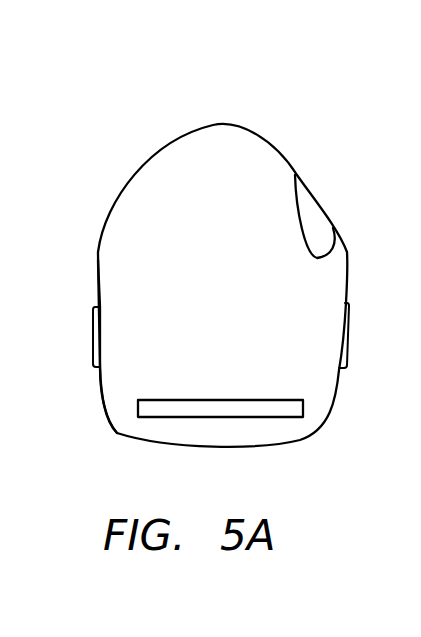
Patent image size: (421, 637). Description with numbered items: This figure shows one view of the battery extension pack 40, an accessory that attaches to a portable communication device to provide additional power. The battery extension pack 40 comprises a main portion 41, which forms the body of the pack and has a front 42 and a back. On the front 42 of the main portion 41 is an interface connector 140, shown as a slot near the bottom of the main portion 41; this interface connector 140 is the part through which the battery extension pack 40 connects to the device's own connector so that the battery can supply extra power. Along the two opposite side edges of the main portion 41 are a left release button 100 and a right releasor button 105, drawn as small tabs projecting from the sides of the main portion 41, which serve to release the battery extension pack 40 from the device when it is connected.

The battery extension pack 40 is at (177, 77).
The main portion 41 is at (303, 288).
The front 42 is at (140, 360).
The right releasor button 105 is at (97, 330).
The left release button 100 is at (345, 368).
The interface connector 140 is at (245, 408).